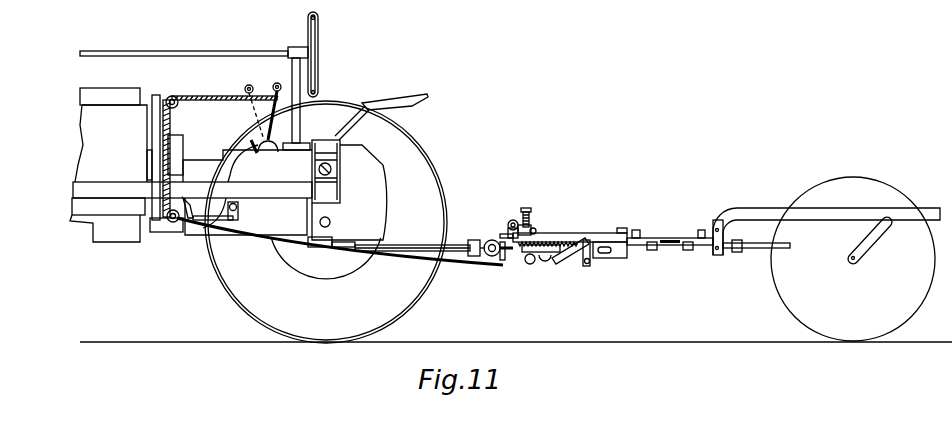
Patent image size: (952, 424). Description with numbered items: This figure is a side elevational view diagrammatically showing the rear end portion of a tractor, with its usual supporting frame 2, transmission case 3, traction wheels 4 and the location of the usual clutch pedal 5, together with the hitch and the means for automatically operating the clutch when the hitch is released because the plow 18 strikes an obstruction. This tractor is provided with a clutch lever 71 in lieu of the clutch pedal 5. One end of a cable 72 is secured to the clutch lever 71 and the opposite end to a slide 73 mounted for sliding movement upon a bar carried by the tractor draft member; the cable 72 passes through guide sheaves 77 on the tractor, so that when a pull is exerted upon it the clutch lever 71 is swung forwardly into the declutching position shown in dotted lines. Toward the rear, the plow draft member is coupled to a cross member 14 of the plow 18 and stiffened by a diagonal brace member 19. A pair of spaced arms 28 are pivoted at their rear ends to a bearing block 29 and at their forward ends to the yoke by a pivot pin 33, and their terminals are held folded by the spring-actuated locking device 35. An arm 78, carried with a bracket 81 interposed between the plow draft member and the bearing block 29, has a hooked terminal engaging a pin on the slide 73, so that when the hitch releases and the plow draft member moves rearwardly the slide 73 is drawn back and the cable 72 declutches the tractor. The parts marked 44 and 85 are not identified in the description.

The supporting frame 2 is at (73, 190).
The transmission case 3 is at (248, 224).
The traction wheels 4 is at (433, 165).
The clutch pedal 5 is at (232, 170).
The cross member 14 is at (700, 250).
The plow 18 is at (835, 172).
The diagonal brace member 19 is at (665, 238).
The spaced arms 28 is at (568, 232).
The bearing block 29 is at (620, 228).
The pivot pin 33 is at (534, 230).
The locking device 35 is at (511, 213).
The spring stud 44 is at (526, 208).
The clutch lever 71 is at (275, 84).
The cable 72 is at (206, 95).
The slide 73 is at (530, 265).
The guide sheaves 77 is at (174, 97).
The arm 78 is at (565, 263).
The bracket 81 is at (618, 259).
The hanger 85 is at (545, 262).